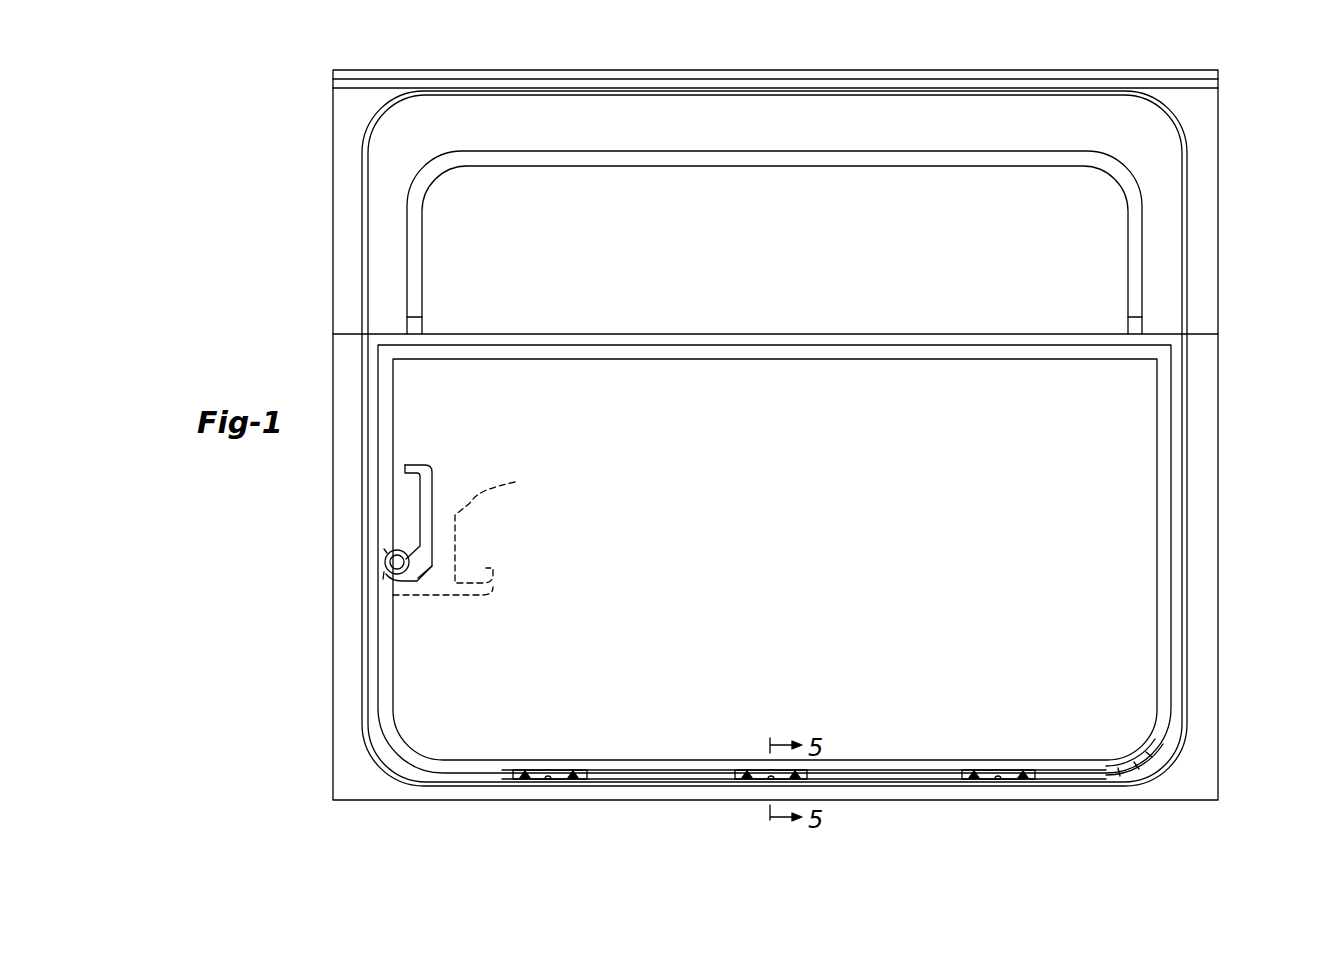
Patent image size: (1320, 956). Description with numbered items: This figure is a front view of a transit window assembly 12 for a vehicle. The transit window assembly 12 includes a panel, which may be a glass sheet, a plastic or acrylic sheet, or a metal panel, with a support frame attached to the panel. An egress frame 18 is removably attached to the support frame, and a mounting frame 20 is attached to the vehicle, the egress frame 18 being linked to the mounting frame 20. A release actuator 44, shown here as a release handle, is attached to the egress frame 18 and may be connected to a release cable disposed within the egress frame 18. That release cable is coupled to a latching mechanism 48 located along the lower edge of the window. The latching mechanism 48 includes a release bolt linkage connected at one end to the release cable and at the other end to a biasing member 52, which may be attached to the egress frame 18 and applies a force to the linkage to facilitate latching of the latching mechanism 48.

The transit window assembly 12 is at (1240, 173).
The egress frame 18 is at (372, 496).
The mounting frame 20 is at (353, 770).
The release actuator 44 is at (428, 482).
The latching mechanism 48 is at (745, 760).
The biasing member 52 is at (1128, 758).